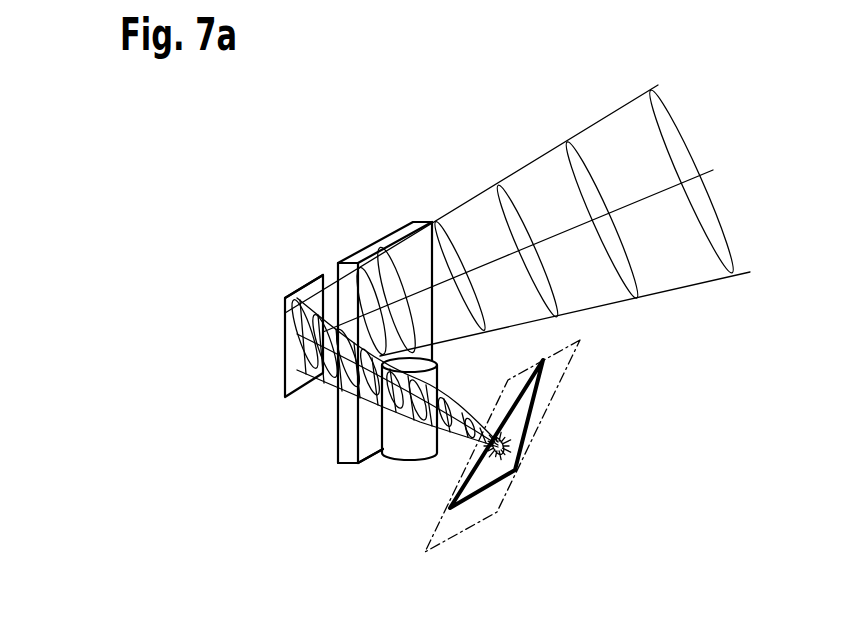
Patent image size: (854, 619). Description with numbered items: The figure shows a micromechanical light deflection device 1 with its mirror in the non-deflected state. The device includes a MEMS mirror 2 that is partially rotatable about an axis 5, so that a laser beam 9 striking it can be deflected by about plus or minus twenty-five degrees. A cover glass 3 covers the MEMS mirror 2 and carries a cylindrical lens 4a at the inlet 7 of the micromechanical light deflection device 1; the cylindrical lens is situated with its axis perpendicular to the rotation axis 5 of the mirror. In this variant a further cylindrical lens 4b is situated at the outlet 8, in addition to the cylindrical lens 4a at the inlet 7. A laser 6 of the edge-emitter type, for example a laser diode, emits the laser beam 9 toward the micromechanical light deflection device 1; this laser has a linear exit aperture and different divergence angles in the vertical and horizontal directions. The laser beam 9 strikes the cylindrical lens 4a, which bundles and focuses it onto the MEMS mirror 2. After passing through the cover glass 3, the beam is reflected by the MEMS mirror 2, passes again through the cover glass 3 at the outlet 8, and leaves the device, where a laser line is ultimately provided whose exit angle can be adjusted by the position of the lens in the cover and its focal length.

The micromechanical light deflection device 1 is at (262, 168).
The MEMS mirror 2 is at (287, 316).
The cover glass 3 is at (338, 437).
The cylindrical lens 4a is at (407, 456).
The cylindrical lens 4b is at (433, 352).
The axis 5 is at (298, 277).
The laser 6 is at (503, 496).
The inlet 7 is at (375, 482).
The outlet 8 is at (383, 222).
The laser beam 9 is at (537, 158).